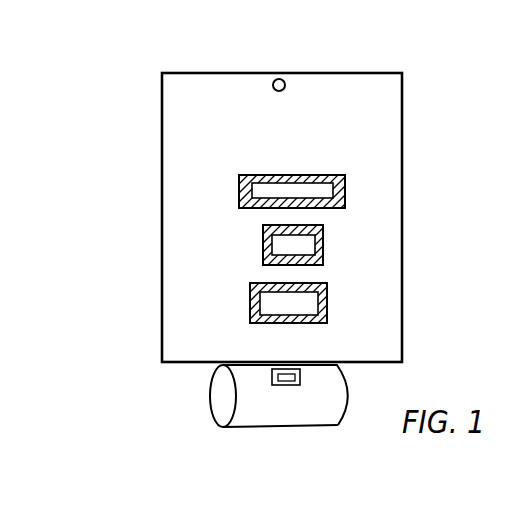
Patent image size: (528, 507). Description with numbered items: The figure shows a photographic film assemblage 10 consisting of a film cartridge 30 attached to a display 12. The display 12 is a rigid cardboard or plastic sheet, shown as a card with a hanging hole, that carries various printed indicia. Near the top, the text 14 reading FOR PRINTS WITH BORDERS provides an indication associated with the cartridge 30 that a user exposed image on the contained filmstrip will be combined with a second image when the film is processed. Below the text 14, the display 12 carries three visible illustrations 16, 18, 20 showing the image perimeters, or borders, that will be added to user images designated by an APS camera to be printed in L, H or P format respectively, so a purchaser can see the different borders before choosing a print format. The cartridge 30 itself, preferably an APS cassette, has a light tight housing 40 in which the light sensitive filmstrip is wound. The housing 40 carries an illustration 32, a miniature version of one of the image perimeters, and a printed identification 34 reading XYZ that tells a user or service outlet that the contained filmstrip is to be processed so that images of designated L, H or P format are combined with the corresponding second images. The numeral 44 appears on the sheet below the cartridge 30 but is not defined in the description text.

The photographic film package 10 is at (424, 114).
The card 12 is at (395, 197).
The print format indicia 14 is at (195, 141).
The classic format aperture indicium 16 is at (263, 243).
The HDTV format aperture indicium 18 is at (250, 300).
The panoramic format aperture indicium 20 is at (239, 192).
The film cartridge 30 is at (222, 448).
The cartridge label 32 is at (302, 378).
The cartridge body 34 is at (295, 418).
The cartridge bottom edge 40 is at (257, 422).
The film 44 is at (347, 495).